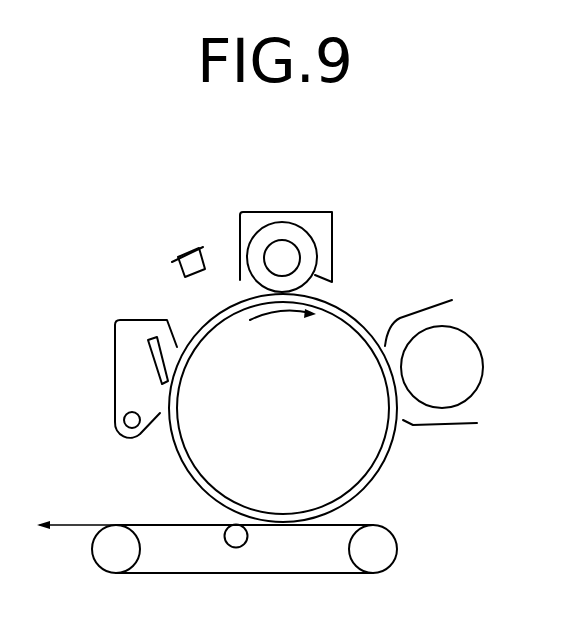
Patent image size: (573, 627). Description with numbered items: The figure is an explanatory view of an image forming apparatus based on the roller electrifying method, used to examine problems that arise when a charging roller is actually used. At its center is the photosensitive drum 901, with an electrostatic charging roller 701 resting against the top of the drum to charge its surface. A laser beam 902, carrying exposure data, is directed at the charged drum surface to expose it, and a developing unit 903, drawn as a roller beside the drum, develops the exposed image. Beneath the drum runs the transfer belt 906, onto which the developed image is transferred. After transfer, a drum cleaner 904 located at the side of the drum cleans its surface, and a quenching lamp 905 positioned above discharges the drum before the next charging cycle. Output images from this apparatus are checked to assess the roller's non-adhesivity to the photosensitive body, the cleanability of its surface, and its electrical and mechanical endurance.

The electrostatic charging roller 701 is at (307, 247).
The photosensitive drum 901 is at (373, 430).
The laser beam 902 is at (359, 308).
The developing unit 903 is at (432, 315).
The drum cleaner 904 is at (128, 390).
The quenching lamp 905 is at (190, 260).
The transfer belt 906 is at (200, 527).